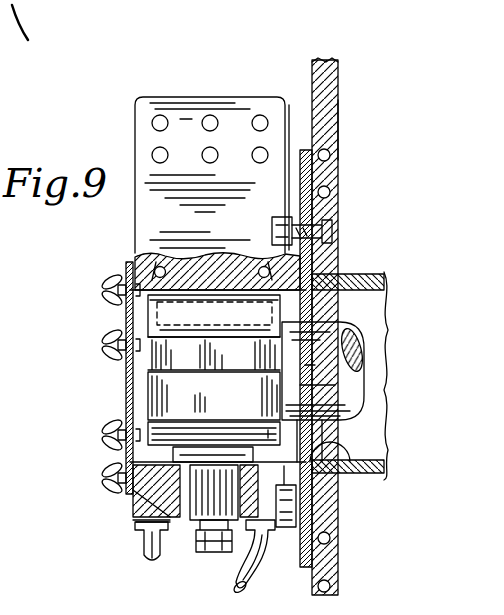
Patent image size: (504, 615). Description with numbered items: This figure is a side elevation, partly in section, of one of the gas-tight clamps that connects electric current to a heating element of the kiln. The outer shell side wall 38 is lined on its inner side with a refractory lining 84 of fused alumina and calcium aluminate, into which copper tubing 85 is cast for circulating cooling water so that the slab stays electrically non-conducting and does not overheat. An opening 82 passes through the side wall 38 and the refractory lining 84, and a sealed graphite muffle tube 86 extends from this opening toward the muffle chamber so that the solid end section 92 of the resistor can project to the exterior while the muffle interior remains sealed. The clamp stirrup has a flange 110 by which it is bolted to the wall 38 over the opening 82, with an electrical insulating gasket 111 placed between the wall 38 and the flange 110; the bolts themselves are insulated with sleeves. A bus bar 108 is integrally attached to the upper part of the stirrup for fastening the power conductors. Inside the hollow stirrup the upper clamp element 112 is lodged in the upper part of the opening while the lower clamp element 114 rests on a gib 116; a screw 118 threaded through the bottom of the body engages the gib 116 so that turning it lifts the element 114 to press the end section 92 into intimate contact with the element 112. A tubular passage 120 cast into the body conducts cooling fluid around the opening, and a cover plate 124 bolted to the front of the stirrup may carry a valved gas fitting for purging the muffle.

The refractory lining 84 is at (330, 85).
The copper tubing 85 is at (338, 128).
The side wall 38 is at (300, 152).
The electrical insulating gasket 111 is at (312, 181).
The muffle tube 86 is at (356, 273).
The opening 82 is at (346, 474).
The end section 92 is at (324, 392).
The bus bar 108 is at (172, 106).
The tubular passage 120 is at (130, 258).
The cover plate 124 is at (124, 381).
The clamp element 112 is at (214, 332).
The clamp element 114 is at (214, 417).
The gib 116 is at (140, 457).
The screw 118 is at (205, 545).
The flange 110 is at (290, 533).